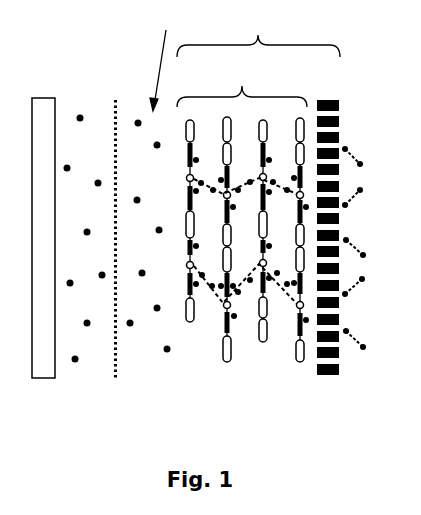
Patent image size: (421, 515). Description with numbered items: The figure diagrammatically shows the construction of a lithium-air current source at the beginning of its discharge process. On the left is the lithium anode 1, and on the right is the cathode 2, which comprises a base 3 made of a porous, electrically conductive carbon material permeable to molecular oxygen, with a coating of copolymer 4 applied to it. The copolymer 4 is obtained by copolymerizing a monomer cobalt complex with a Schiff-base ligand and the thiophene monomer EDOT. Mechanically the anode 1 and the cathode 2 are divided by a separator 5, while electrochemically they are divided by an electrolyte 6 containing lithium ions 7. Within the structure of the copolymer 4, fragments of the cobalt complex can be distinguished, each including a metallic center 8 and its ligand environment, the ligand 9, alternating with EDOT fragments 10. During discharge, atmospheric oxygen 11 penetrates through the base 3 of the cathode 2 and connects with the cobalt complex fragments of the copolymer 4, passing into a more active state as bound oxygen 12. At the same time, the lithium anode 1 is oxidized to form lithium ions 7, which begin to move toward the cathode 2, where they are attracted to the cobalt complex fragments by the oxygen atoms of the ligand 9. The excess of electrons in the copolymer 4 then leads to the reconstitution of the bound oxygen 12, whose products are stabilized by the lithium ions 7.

The lithium anode 1 is at (42, 112).
The cathode 2 is at (258, 33).
The base 3 is at (341, 118).
The copolymer 4 is at (196, 244).
The separator 5 is at (112, 353).
The electrolyte 6 is at (162, 57).
The lithium ions 7 is at (81, 116).
The metallic center 8 is at (188, 268).
The ligand 9 is at (231, 318).
The EDOT fragment 10 is at (186, 220).
The atmospheric oxygen 11 is at (356, 153).
The bound oxygen 12 is at (208, 282).